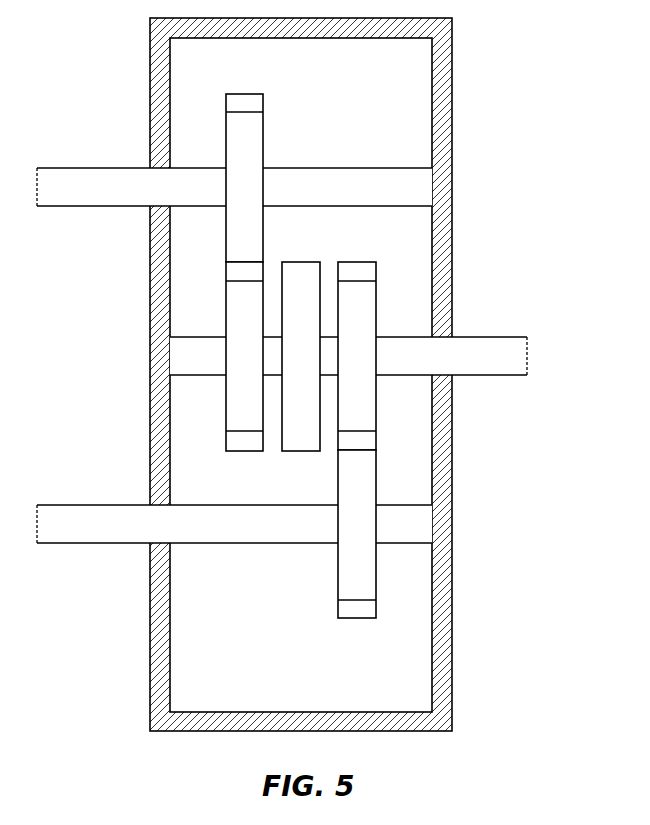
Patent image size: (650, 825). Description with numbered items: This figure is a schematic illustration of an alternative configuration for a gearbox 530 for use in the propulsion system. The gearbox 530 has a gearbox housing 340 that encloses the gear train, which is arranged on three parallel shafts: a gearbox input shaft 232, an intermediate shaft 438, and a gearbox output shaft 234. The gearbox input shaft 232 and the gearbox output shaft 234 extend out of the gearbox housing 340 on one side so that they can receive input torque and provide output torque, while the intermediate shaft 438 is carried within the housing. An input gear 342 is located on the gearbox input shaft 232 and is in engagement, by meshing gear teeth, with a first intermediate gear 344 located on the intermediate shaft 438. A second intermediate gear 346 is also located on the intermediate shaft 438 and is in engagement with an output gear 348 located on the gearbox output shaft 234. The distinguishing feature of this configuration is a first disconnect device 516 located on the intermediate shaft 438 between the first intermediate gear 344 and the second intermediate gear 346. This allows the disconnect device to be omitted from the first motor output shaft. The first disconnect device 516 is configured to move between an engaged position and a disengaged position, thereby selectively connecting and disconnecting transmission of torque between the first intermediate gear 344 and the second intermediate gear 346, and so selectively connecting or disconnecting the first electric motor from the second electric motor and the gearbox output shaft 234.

The gearbox 530 is at (113, 57).
The gearbox housing 340 is at (282, 370).
The gearbox input shaft 232 is at (377, 168).
The gearbox output shaft 234 is at (224, 545).
The intermediate shaft 438 is at (490, 336).
The input gear 342 is at (264, 132).
The first intermediate gear 344 is at (226, 308).
The first disconnect device 516 is at (282, 402).
The second intermediate gear 346 is at (376, 403).
The output gear 348 is at (338, 473).